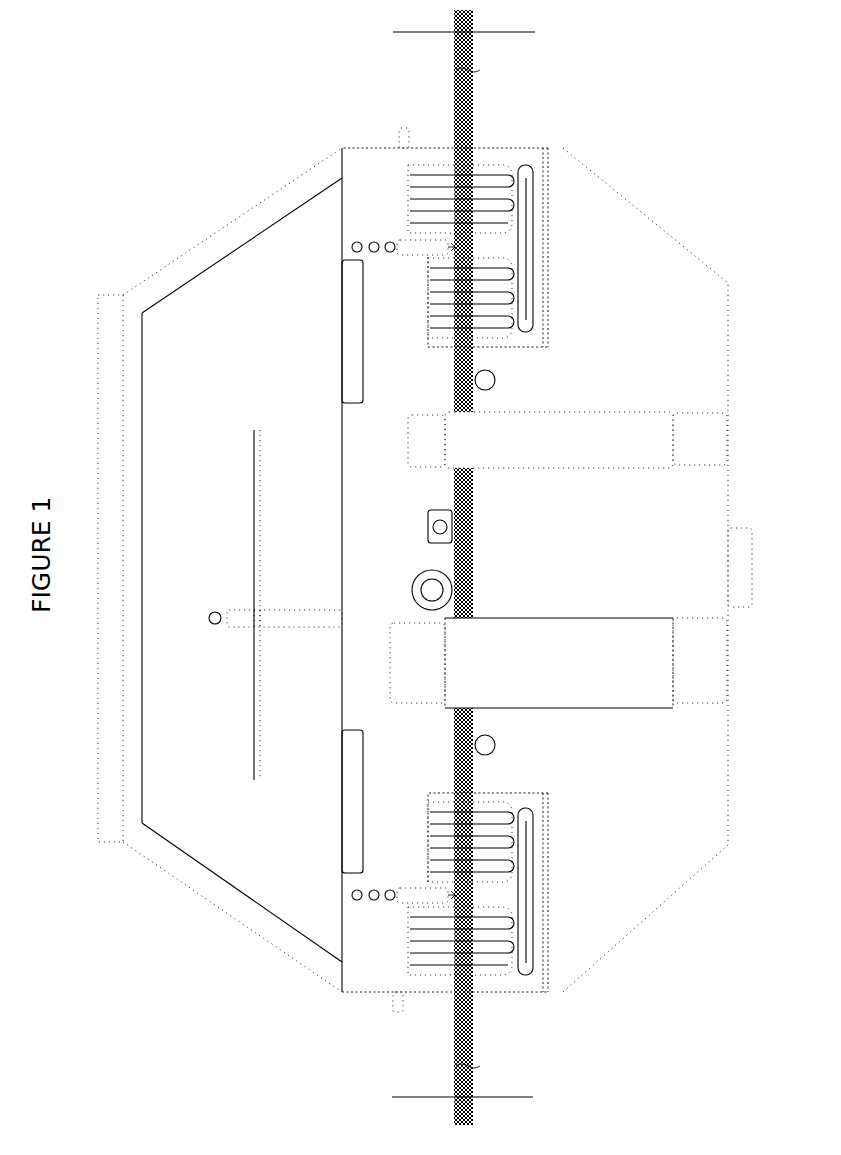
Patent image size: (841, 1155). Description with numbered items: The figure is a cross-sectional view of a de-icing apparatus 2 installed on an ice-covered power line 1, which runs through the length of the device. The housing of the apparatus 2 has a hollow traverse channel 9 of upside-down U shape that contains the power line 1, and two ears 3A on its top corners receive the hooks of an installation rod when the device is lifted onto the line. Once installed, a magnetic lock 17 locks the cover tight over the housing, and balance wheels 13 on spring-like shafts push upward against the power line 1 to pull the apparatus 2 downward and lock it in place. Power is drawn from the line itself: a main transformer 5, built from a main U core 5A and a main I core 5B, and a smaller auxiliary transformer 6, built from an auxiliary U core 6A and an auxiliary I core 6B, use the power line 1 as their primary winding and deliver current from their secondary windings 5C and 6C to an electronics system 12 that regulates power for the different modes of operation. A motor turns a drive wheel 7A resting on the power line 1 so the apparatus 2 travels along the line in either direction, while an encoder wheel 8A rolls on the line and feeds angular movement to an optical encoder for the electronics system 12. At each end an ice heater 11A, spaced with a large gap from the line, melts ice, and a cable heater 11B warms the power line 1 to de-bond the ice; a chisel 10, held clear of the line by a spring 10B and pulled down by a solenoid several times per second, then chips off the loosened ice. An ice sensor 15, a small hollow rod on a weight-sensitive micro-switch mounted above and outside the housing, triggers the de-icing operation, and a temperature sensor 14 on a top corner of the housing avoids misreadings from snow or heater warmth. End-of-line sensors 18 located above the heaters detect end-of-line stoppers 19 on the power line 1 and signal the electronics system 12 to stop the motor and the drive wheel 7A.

The power line 1 is at (452, 110).
The apparatus 2 is at (703, 830).
The ears 3A is at (342, 295).
The main transformer 5 is at (655, 673).
The main "U" core 5A is at (417, 673).
The main "I" core 5B is at (717, 673).
The secondary winding 5C is at (573, 663).
The auxiliary transformer 6 is at (592, 460).
The auxiliary "U" core 6A is at (408, 415).
The auxiliary "I" core 6B is at (718, 422).
The secondary winding 6C is at (620, 428).
The drive wheel 7A is at (410, 588).
The encoder wheel 8A is at (428, 527).
The hollow traverse channel 9 is at (430, 511).
The chisel 10 is at (398, 240).
The spring 10B is at (365, 242).
The ice heater 11A is at (510, 167).
The cable heater 11B is at (525, 235).
The electronics system 12 is at (672, 553).
The balance wheels 13 is at (494, 373).
The temperature sensor 14 is at (214, 612).
The ice sensor 15 is at (252, 463).
The magnetic lock 17 is at (752, 608).
The end-of-line sensors 18 is at (392, 135).
The end-of-line stoppers 19 is at (513, 34).